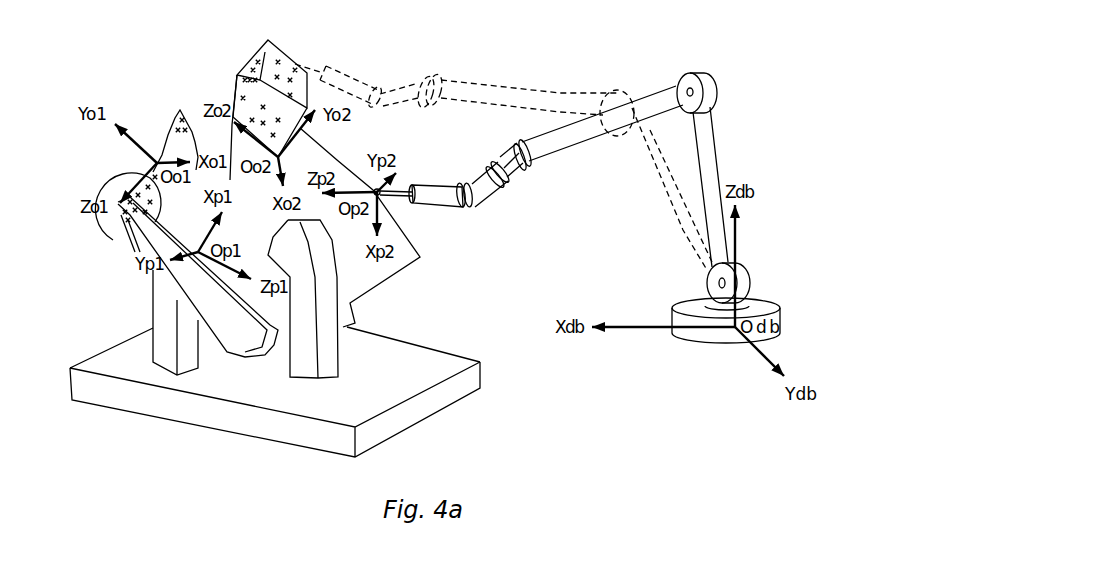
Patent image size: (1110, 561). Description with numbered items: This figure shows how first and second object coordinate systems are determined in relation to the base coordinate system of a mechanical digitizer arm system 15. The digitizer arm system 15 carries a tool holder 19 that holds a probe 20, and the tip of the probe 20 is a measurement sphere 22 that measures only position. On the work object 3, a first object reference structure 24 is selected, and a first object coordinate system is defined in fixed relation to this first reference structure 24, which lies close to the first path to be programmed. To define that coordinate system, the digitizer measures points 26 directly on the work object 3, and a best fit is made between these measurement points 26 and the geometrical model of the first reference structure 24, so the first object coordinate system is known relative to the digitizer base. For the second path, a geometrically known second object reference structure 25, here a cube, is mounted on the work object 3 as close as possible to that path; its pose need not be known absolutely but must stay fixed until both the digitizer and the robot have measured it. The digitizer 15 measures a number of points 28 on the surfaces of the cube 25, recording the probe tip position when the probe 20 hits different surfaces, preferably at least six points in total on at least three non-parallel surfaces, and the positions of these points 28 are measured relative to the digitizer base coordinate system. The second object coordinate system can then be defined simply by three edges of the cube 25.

The work object 3 is at (365, 277).
The mechanical digitizer arm system 15 is at (731, 128).
The tool holder 19 is at (413, 87).
The probe 20 is at (410, 185).
The measurement sphere 22 is at (384, 196).
The first object reference structure 24 is at (127, 232).
The second object reference structure 25 is at (267, 85).
The points 26 is at (152, 174).
The points 28 is at (255, 63).